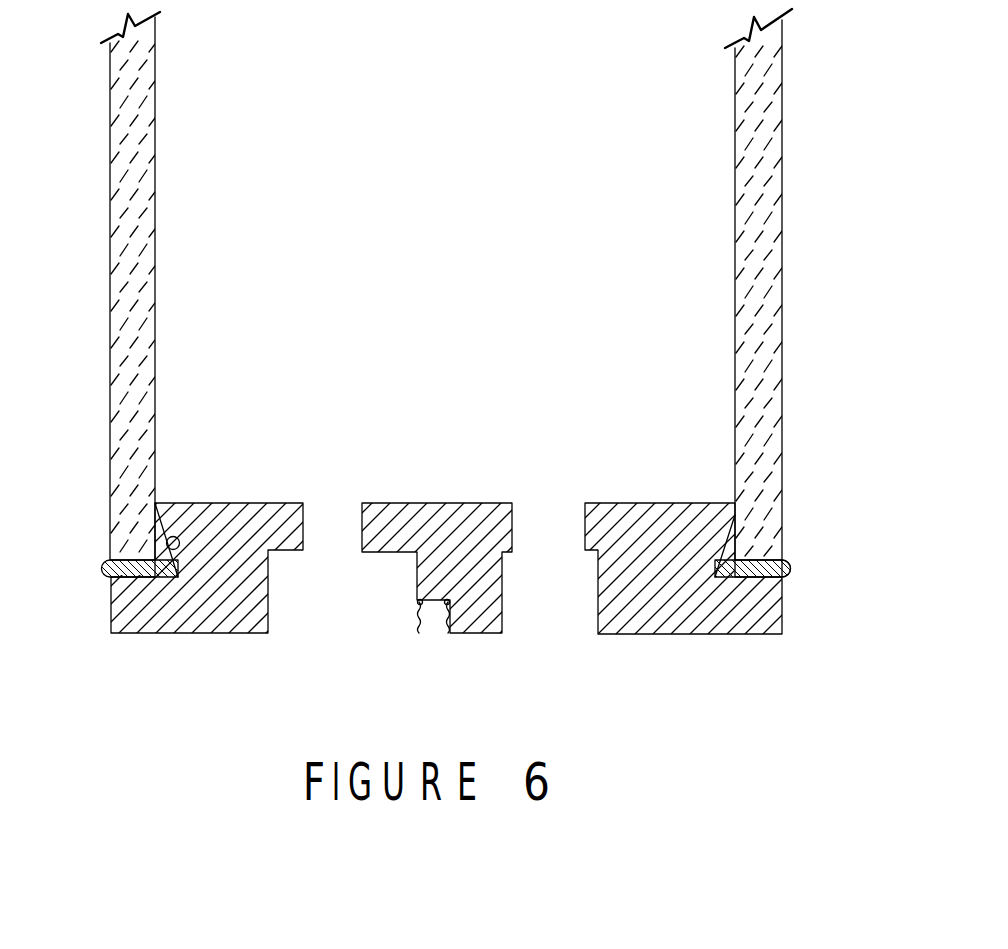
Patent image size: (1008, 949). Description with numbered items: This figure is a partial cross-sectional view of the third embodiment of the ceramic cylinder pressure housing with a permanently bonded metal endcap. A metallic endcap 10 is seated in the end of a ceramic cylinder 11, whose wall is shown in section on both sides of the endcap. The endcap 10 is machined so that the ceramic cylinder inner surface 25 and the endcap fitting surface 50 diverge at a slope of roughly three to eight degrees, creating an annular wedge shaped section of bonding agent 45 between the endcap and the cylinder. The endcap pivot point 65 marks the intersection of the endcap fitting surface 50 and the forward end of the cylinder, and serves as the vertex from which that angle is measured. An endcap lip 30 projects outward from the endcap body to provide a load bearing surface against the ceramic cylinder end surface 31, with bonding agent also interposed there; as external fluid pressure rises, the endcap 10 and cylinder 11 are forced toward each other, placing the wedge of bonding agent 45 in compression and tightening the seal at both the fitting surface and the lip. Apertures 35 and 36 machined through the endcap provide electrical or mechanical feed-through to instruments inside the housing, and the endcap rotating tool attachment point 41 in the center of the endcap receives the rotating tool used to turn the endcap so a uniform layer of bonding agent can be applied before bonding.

The metallic endcap 10 is at (465, 386).
The ceramic cylinder 11 is at (499, 284).
The ceramic cylinder inner surface 25 is at (735, 217).
The endcap lip 30 is at (440, 602).
The ceramic cylinder end surface 31 is at (773, 558).
The aperture 35 is at (270, 577).
The aperture 36 is at (598, 592).
The endcap rotating tool attachment point 41 is at (440, 617).
The annular wedge shaped section of bonding agent 45 is at (445, 518).
The endcap fitting surface 50 is at (175, 538).
The endcap pivot point 65 is at (735, 512).